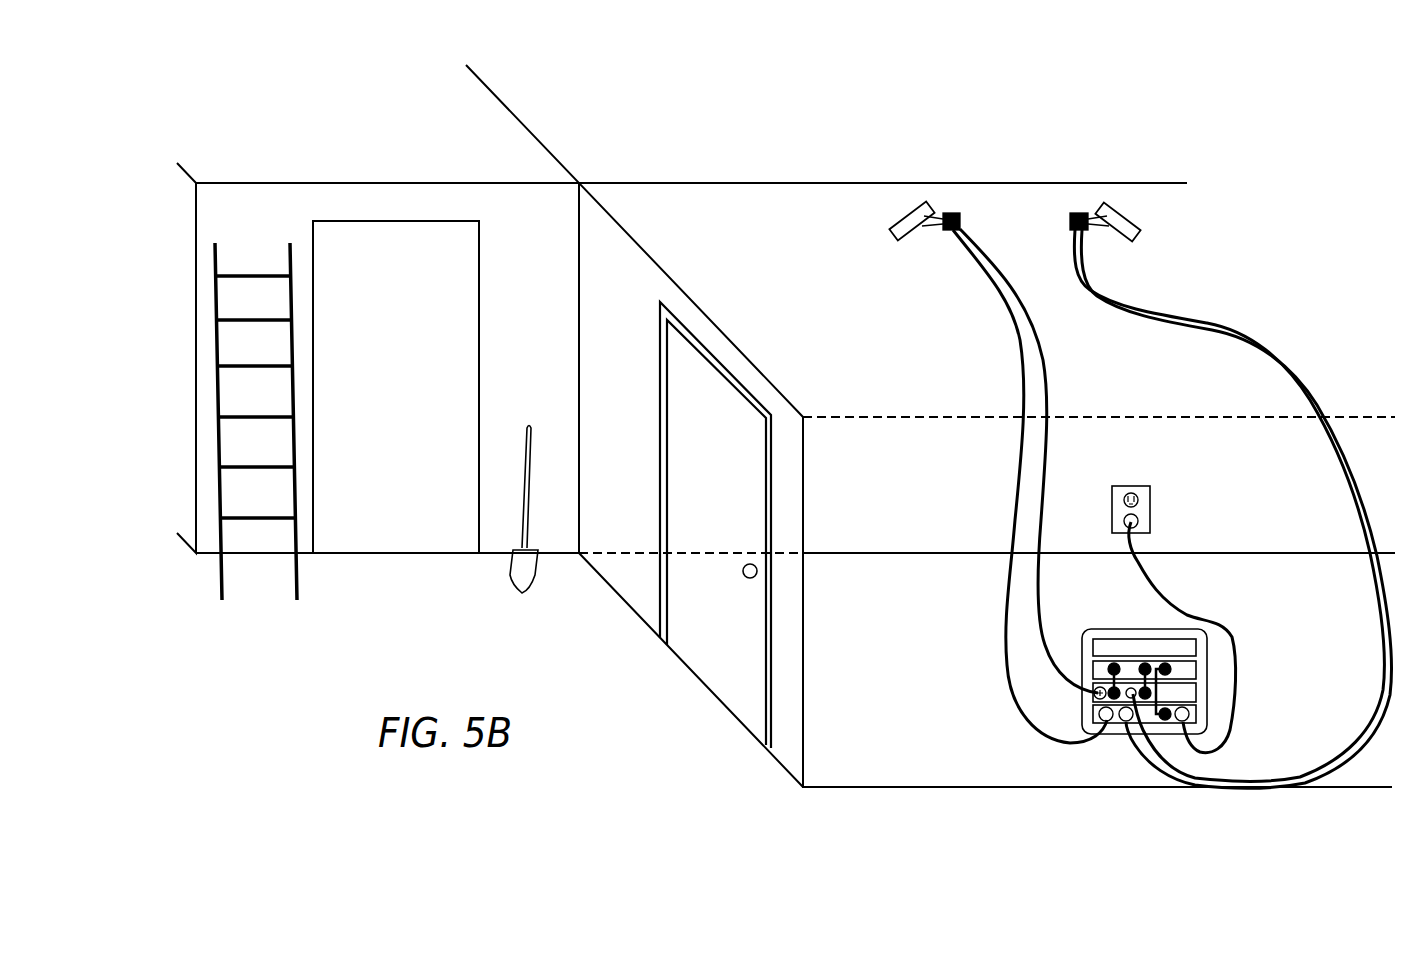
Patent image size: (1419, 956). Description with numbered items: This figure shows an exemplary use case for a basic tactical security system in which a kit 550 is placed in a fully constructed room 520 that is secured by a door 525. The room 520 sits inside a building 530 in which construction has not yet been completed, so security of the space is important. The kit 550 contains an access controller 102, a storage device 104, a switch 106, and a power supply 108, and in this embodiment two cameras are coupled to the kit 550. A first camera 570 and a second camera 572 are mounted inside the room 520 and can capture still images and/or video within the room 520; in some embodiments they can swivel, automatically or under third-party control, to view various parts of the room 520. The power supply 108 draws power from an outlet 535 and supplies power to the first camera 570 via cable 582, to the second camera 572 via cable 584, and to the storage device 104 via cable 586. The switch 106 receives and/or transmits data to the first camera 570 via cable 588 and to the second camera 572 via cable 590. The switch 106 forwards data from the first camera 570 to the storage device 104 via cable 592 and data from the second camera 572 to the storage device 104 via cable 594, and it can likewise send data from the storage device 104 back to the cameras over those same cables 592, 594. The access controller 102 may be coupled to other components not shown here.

The building 530 is at (1038, 142).
The room 520 is at (1247, 276).
The door 525 is at (707, 400).
The first camera 570 is at (907, 212).
The second camera 572 is at (1128, 212).
The outlet 535 is at (1152, 512).
The kit 550 is at (1213, 648).
The access controller 102 is at (1197, 648).
The storage device 104 is at (1197, 668).
The switch 106 is at (1197, 690).
The power supply 108 is at (1197, 712).
The cable 582 is at (1005, 615).
The cable 584 is at (1313, 385).
The cable 586 is at (1180, 735).
The cable 588 is at (1047, 463).
The cable 590 is at (1357, 503).
The cable 592 is at (1093, 690).
The cable 594 is at (1130, 688).